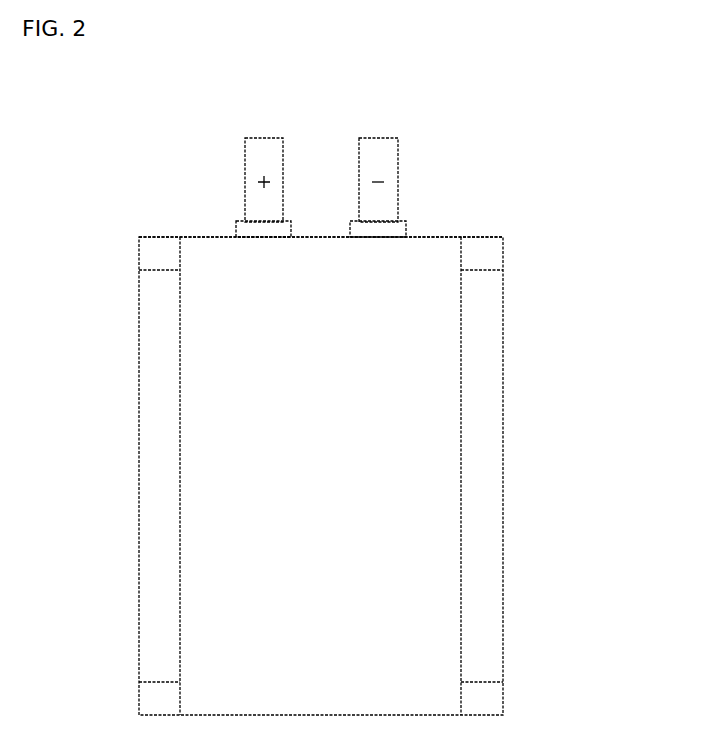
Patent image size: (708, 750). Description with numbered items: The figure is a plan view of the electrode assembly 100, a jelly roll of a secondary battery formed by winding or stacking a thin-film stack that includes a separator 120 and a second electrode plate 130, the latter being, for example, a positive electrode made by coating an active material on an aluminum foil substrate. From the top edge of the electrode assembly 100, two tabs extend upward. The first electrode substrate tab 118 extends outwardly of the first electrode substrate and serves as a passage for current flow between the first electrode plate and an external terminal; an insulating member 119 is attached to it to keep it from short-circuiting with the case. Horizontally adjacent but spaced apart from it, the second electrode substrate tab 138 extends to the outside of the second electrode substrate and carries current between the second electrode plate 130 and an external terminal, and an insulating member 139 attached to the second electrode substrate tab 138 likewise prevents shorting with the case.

The electrode assembly 100 is at (513, 552).
The separator 120 is at (484, 233).
The second electrode plate 130 is at (490, 316).
The second electrode substrate tab 138 is at (262, 144).
The insulating member 139 is at (255, 227).
The first electrode substrate tab 118 is at (380, 145).
The insulating member 119 is at (392, 227).